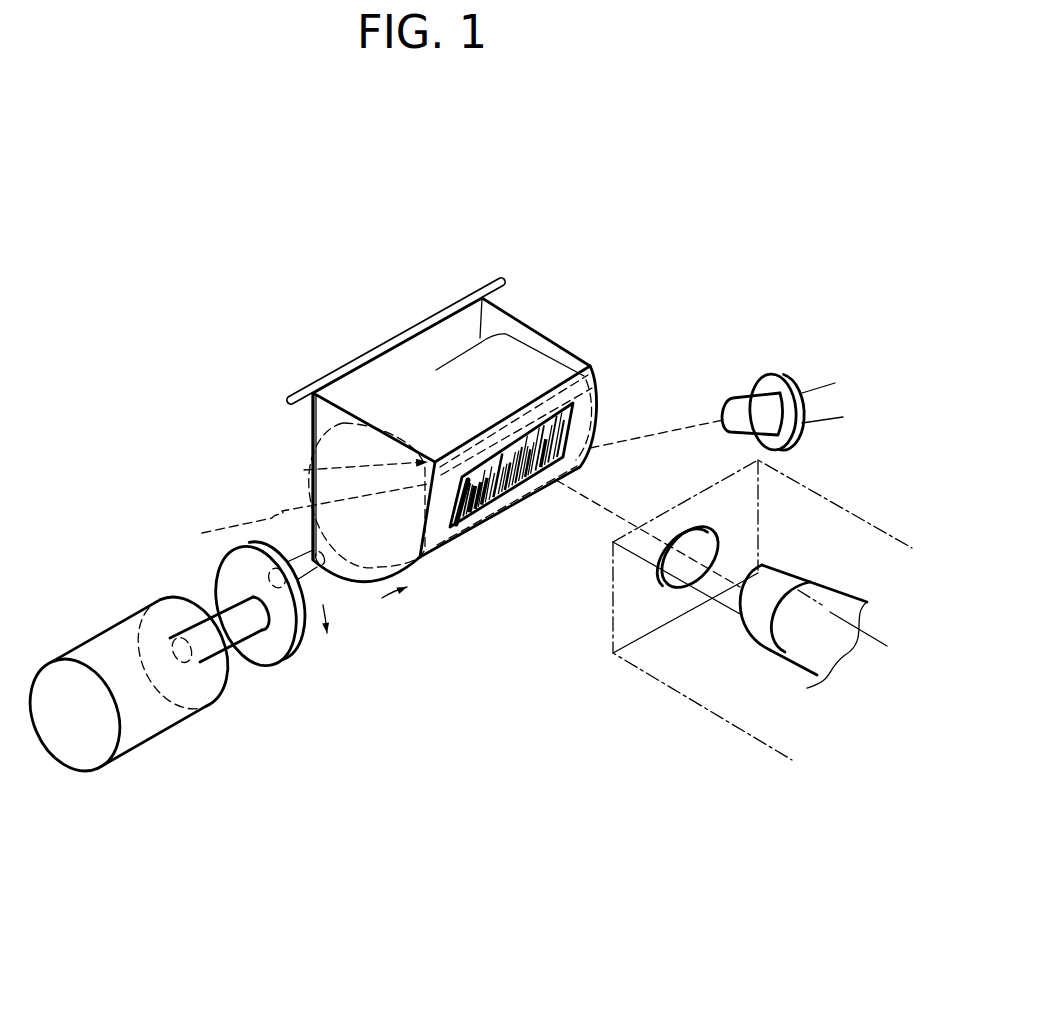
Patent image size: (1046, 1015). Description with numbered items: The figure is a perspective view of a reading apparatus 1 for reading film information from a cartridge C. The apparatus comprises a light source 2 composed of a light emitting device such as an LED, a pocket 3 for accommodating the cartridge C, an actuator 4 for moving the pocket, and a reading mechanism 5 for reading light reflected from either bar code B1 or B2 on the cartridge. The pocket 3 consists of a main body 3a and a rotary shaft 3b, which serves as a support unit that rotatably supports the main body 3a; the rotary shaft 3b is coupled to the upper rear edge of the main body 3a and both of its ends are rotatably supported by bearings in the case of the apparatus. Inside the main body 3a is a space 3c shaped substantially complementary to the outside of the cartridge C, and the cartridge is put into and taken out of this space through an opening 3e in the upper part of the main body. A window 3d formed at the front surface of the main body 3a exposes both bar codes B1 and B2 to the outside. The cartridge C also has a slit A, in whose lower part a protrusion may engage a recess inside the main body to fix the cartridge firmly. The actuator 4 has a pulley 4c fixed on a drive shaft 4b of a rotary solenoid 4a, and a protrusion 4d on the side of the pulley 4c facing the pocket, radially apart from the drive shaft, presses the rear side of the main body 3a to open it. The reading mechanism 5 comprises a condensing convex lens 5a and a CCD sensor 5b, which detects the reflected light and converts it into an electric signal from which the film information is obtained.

The reading apparatus 1 is at (538, 267).
The light source 2 is at (742, 412).
The pocket 3 is at (125, 243).
The main body 3a is at (425, 420).
The rotary shaft 3b is at (313, 395).
The space 3c is at (413, 367).
The window 3d is at (477, 513).
The opening 3e is at (470, 303).
The actuator 4 is at (100, 797).
The rotary solenoid 4a is at (138, 720).
The drive shaft 4b is at (223, 635).
The pulley 4c is at (277, 645).
The protrusion 4d is at (313, 573).
The reading mechanism 5 is at (612, 820).
The convex lens 5a is at (685, 572).
The CCD sensor 5b is at (753, 610).
The slit A is at (461, 503).
The bar code B1 is at (580, 372).
The bar code B2 is at (592, 415).
The cartridge C is at (304, 470).